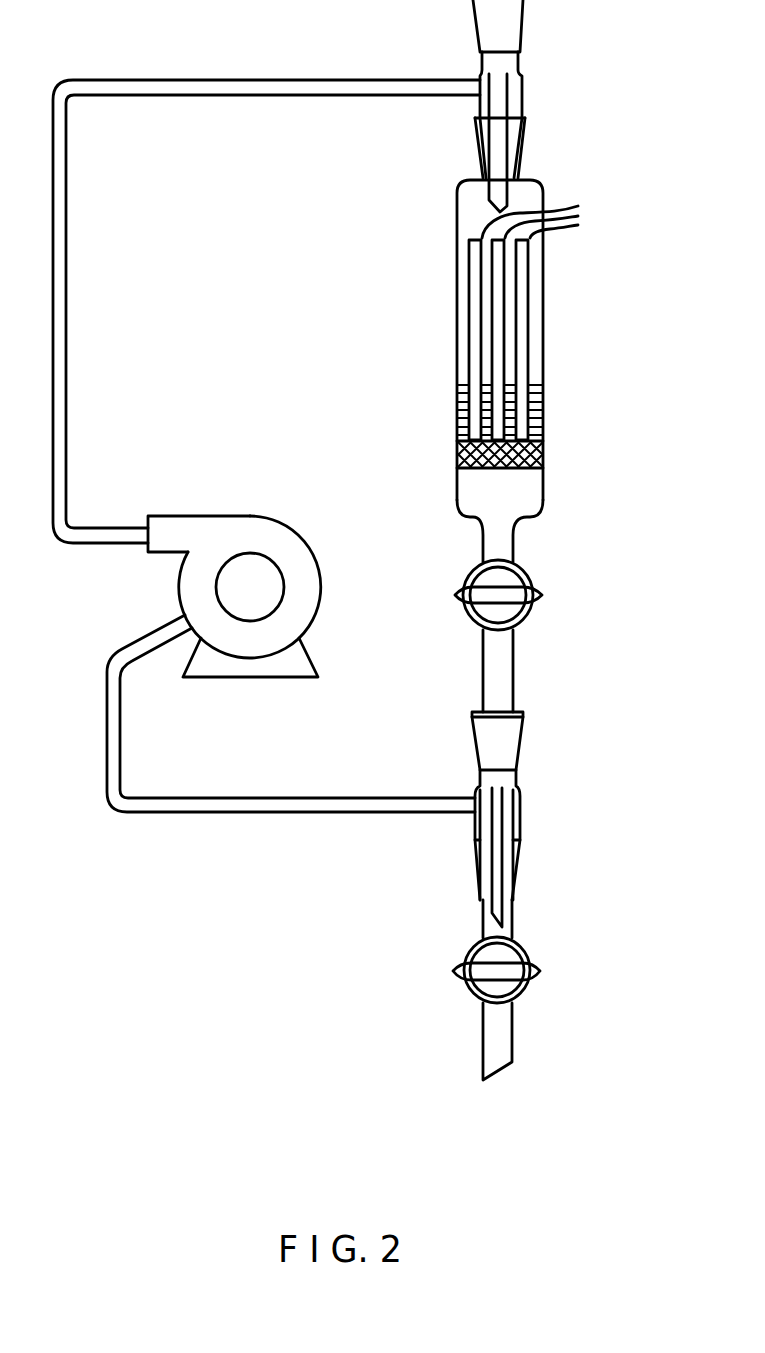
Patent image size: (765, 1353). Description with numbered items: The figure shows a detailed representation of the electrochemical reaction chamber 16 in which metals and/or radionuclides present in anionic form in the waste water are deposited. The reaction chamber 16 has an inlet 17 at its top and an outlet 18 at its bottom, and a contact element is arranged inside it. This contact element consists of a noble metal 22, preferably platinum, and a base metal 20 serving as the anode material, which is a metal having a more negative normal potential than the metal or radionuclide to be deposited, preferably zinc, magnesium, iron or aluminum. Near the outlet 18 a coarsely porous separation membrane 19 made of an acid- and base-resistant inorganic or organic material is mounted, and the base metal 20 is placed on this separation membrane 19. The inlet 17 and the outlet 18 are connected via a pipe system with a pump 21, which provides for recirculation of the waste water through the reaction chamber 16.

The electrochemical reaction chamber 16 is at (453, 222).
The inlet 17 is at (468, 112).
The outlet 18 is at (468, 832).
The coarsely porous separation membrane 19 is at (542, 460).
The base metal 20 is at (540, 403).
The pump 21 is at (242, 516).
The noble metal 22 is at (538, 313).